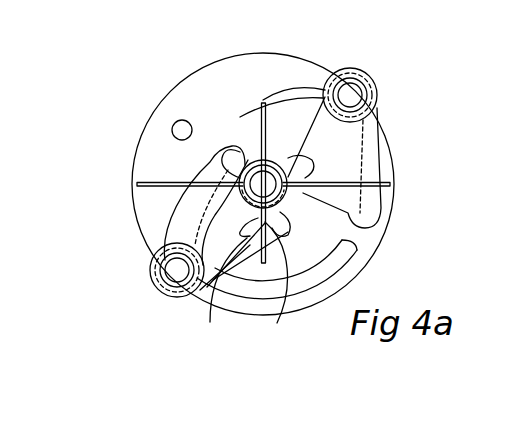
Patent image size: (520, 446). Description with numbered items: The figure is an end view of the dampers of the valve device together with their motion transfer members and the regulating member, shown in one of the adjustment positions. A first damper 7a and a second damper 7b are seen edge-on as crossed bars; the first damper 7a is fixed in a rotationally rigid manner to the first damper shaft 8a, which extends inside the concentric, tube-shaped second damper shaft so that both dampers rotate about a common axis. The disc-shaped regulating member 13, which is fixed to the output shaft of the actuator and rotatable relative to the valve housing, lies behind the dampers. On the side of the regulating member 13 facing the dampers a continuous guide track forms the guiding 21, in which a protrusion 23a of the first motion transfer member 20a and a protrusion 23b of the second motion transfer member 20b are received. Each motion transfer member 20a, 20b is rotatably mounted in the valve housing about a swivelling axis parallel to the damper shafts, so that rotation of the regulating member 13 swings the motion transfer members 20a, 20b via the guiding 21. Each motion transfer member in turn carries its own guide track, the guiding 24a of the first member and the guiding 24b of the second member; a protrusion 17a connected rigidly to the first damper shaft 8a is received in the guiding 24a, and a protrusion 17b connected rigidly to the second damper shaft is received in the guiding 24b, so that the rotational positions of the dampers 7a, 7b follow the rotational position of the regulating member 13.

The first damper shaft 8a is at (257, 104).
The regulating member 13 is at (192, 80).
The first damper 7a is at (265, 100).
The second damper 7b is at (352, 186).
The first motion transfer member 20a is at (180, 205).
The second motion transfer member 20b is at (352, 160).
The protrusion 23a is at (232, 150).
The protrusion 23b is at (366, 220).
The guiding of the first motion transfer member 24a is at (210, 287).
The guiding of the second motion transfer member 24b is at (308, 175).
The guiding 21 is at (338, 250).
The protrusion 17a is at (278, 322).
The protrusion 17b is at (318, 197).